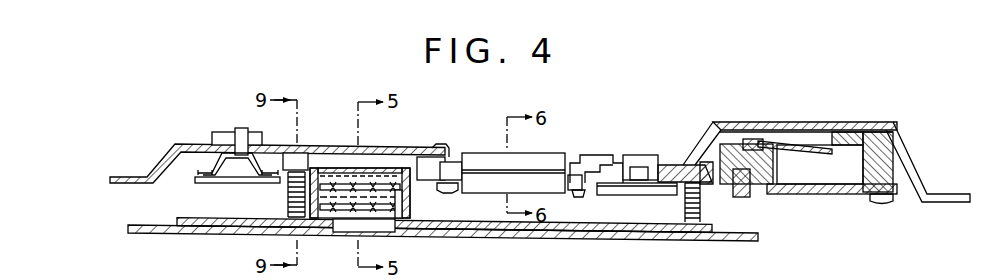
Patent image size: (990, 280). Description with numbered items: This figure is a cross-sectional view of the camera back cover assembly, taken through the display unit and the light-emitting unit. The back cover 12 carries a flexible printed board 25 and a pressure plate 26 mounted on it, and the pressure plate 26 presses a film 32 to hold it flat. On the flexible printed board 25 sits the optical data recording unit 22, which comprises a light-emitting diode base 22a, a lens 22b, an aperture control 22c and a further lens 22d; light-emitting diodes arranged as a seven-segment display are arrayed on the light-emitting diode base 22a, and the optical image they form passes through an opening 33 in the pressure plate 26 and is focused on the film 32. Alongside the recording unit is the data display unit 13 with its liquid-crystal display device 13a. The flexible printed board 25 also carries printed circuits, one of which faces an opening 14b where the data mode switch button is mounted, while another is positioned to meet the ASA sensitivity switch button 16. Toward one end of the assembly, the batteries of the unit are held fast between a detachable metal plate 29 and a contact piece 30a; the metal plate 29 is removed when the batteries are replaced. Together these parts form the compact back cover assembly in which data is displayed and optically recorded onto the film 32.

The ASA sensitivity switch button 16 is at (232, 133).
The film 32 is at (242, 234).
The pressure plate 26 is at (605, 233).
The back cover 12 is at (321, 150).
The lens 22b is at (330, 177).
The optical data recording unit 22 is at (378, 168).
The light-emitting diode base 22a is at (405, 157).
The aperture control 22c is at (400, 220).
The lens 22d is at (328, 225).
The opening 33 is at (370, 224).
The data display unit 13 is at (480, 156).
The liquid-crystal display device 13a is at (531, 160).
The flexible printed board 25 is at (600, 156).
The opening 14b is at (648, 153).
The contact piece 30a is at (783, 130).
The metal plate 29 is at (808, 195).